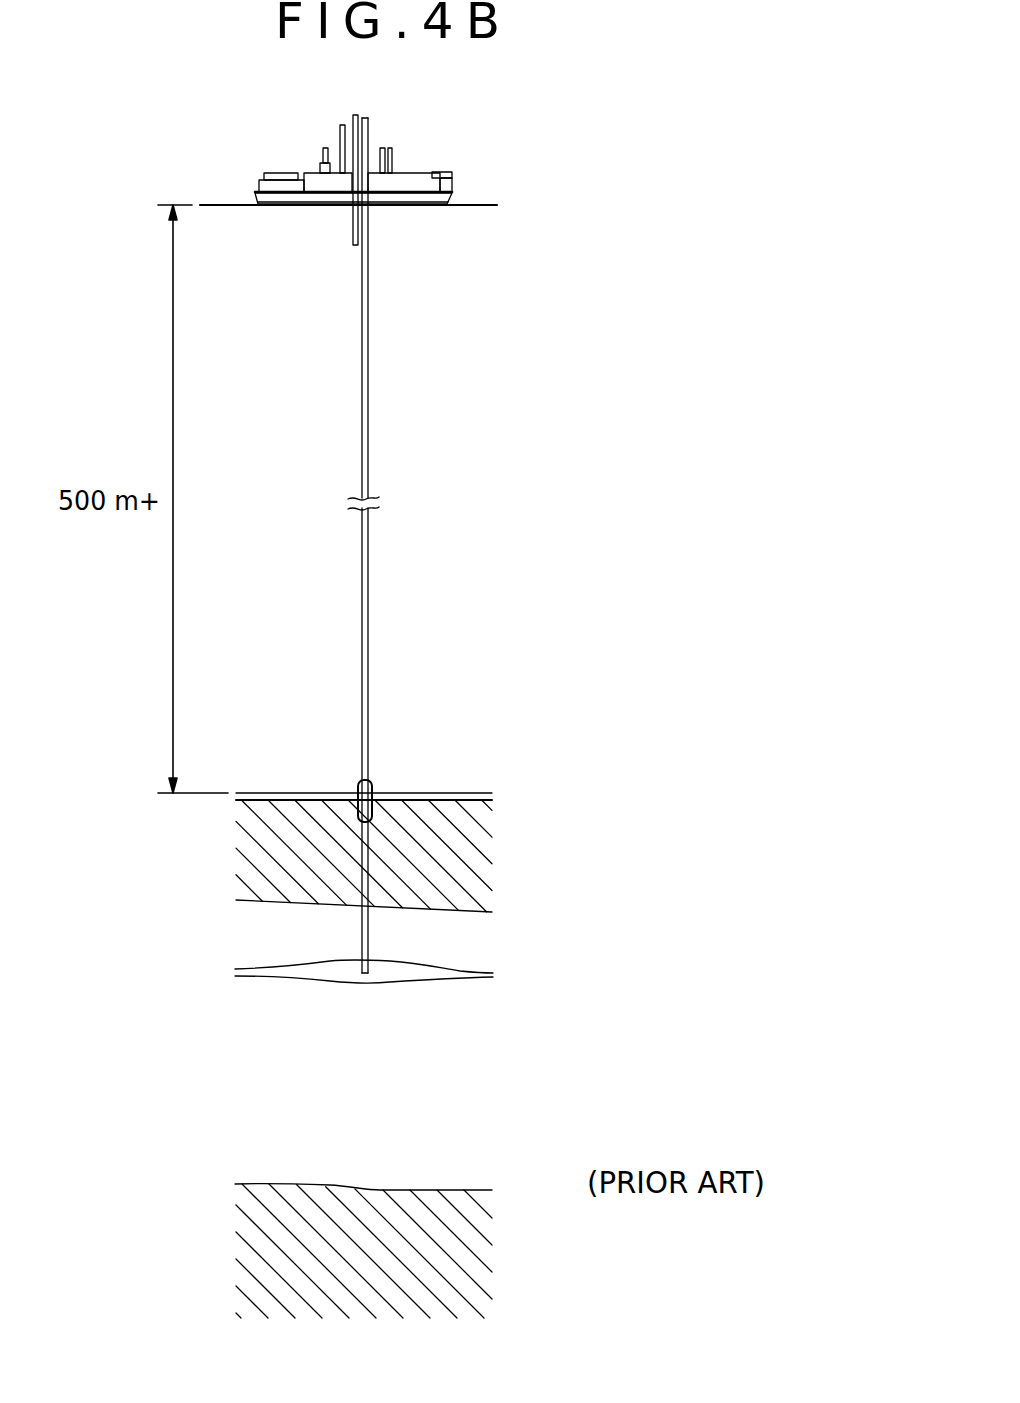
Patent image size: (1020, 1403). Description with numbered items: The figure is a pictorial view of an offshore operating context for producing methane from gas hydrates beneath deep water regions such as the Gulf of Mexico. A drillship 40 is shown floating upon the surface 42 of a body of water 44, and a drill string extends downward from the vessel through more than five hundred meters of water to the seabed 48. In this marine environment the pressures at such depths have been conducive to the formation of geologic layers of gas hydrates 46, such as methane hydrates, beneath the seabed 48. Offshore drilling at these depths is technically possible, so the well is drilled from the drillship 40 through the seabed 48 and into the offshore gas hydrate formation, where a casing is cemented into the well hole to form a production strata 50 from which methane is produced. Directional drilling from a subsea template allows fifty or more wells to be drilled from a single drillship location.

The drillship 40 is at (412, 180).
The surface 42 is at (229, 200).
The body of water 44 is at (554, 458).
The gas hydrates 46 is at (465, 1068).
The seabed 48 is at (250, 833).
The production strata 50 is at (455, 972).